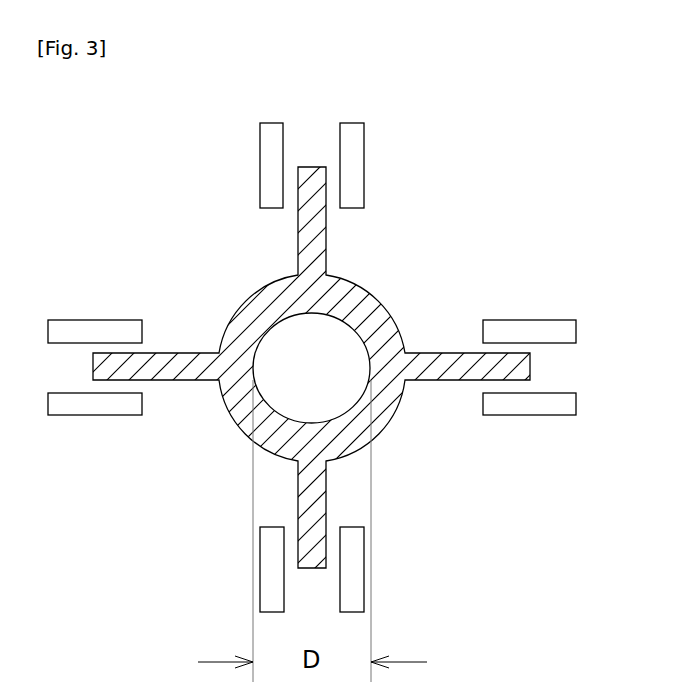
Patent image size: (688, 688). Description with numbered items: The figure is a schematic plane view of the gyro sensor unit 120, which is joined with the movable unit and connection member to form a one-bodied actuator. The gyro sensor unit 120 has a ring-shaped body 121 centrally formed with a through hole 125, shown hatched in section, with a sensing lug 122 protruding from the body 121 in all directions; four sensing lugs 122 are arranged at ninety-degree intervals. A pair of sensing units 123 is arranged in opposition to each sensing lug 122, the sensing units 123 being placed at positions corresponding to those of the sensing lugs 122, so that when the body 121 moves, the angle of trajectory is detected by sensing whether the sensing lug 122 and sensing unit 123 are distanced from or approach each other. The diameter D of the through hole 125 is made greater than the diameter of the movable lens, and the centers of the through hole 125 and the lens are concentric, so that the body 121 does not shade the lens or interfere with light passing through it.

The gyro sensor unit 120 is at (544, 206).
The body 121 is at (384, 308).
The sensing lug 122 is at (326, 237).
The sensing unit 123 is at (275, 123).
The through hole 125 is at (363, 388).